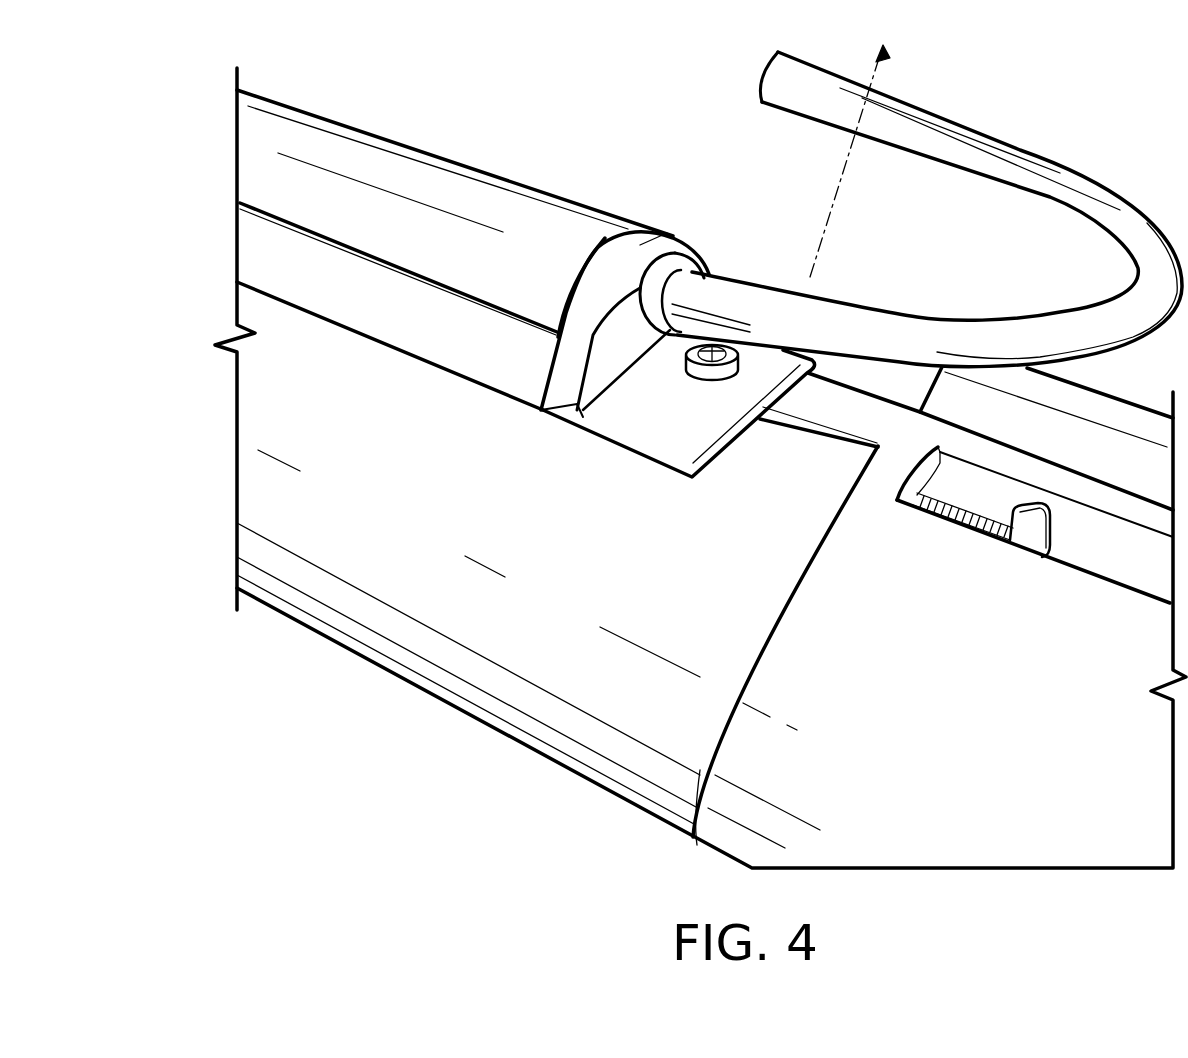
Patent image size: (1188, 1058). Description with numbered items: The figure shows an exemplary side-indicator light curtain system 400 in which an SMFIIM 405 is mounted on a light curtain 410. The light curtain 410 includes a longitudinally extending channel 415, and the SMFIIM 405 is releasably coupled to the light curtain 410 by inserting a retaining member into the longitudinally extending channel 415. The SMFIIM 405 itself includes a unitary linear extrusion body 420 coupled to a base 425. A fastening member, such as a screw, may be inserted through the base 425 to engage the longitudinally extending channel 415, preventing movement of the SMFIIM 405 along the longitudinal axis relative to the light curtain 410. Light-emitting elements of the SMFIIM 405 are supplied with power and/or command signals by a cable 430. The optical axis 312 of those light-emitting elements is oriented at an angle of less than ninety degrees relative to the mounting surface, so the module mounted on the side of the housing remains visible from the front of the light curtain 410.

The optical axis 312 is at (850, 153).
The side-indicator light curtain system 400 is at (664, 261).
The SMFIIM 405 is at (440, 142).
The light curtain 410 is at (582, 800).
The longitudinally extending channel 415 is at (820, 437).
The unitary linear extrusion body 420 is at (270, 255).
The base 425 is at (660, 235).
The cable 430 is at (930, 325).